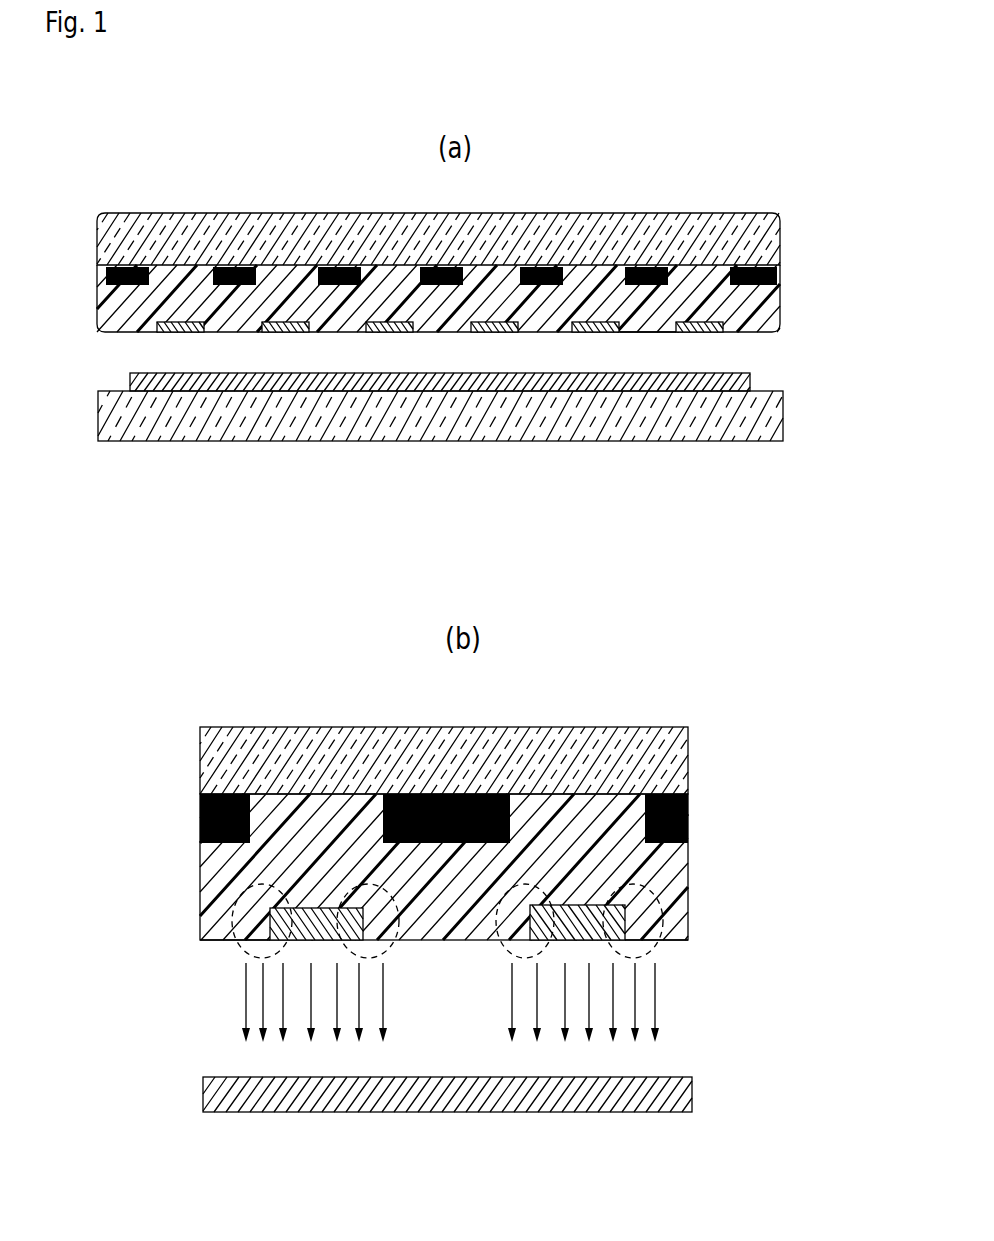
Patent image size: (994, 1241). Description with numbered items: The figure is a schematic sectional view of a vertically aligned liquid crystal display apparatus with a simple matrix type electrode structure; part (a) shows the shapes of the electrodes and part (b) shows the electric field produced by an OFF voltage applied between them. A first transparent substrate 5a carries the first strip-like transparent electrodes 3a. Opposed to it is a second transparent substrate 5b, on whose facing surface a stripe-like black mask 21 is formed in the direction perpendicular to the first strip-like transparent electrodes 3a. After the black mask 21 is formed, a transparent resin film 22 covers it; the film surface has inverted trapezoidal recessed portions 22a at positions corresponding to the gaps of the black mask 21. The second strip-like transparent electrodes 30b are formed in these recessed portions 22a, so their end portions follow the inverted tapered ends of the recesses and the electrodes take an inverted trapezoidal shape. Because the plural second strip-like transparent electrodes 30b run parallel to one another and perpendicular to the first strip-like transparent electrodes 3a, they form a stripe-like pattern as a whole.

The second transparent substrate 5b is at (706, 224).
The stripe-like black mask 21 is at (782, 258).
The transparent resin film 22 is at (770, 296).
The recessed portions 22a is at (680, 323).
The second strip-like transparent electrodes 30b is at (704, 330).
The first strip-like transparent electrodes 3a is at (752, 380).
The first transparent substrate 5a is at (743, 441).